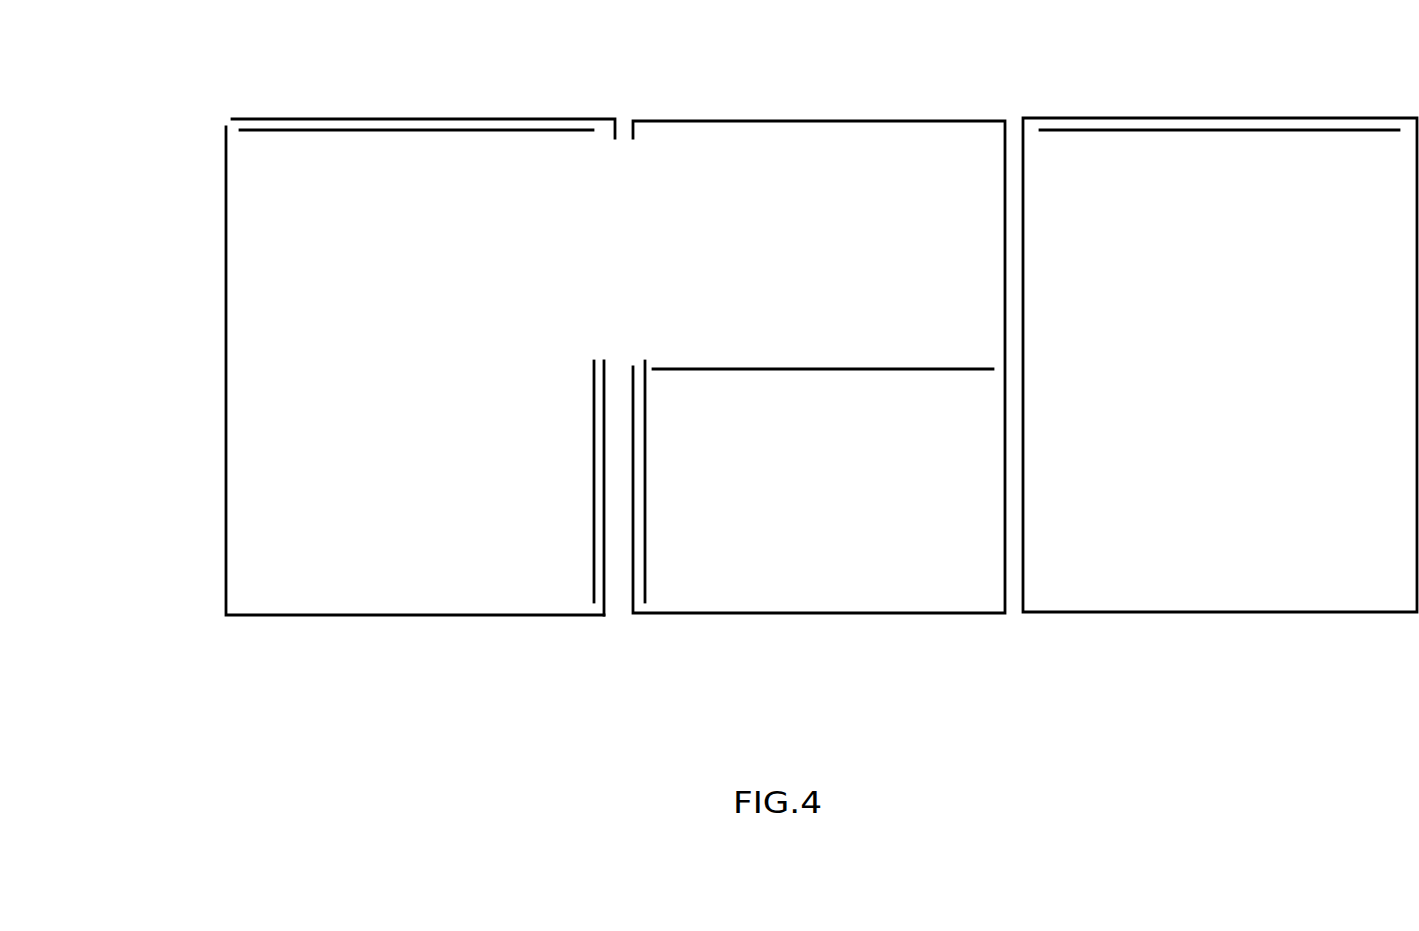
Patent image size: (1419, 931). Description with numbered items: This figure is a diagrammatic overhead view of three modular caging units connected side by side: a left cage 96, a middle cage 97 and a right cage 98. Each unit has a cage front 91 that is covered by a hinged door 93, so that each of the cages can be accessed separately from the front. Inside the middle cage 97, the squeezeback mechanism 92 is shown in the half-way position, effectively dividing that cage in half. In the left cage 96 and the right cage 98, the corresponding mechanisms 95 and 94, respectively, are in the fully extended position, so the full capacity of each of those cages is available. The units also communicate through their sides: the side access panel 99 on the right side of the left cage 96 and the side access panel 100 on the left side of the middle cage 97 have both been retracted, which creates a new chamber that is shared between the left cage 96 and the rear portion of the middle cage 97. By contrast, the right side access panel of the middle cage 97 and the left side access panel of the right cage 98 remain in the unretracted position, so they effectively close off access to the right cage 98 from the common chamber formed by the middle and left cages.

The cage front 91 is at (227, 615).
The squeezeback mechanism 92 is at (738, 369).
The hinged door 93 is at (227, 615).
The squeezeback mechanism 94 is at (1238, 130).
The squeezeback mechanism 95 is at (442, 130).
The left cage 96 is at (318, 119).
The middle cage 97 is at (738, 121).
The right cage 98 is at (1172, 118).
The side access panel 99 is at (593, 515).
The side access panel 100 is at (646, 513).